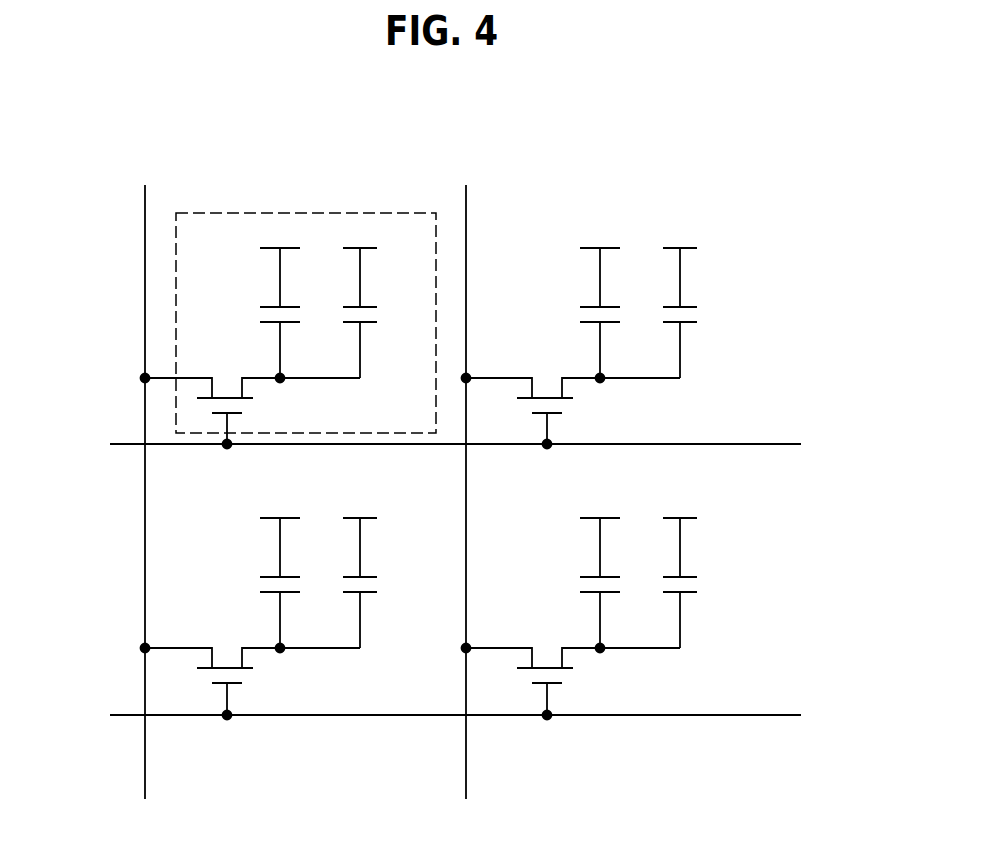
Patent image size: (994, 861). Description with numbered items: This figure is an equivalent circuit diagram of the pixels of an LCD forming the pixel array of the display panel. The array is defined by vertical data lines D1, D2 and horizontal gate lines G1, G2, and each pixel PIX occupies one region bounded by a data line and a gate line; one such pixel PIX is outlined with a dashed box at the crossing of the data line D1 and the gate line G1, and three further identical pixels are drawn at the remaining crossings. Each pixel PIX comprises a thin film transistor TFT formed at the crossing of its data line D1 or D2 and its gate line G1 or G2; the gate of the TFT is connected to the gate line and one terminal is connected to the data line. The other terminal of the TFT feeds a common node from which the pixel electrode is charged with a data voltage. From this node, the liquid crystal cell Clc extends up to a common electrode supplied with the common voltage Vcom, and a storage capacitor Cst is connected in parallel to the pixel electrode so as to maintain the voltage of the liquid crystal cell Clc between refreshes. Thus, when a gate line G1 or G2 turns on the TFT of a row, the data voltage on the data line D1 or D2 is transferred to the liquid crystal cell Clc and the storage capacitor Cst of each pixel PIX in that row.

The data line D1 is at (145, 476).
The data line D2 is at (465, 476).
The gate line G1 is at (442, 445).
The gate line G2 is at (442, 714).
The pixel PIX is at (300, 212).
The common voltage Vcom is at (436, 368).
The liquid crystal cell Clc is at (417, 448).
The storage capacitor Cst is at (543, 448).
The thin film transistor TFT is at (411, 547).